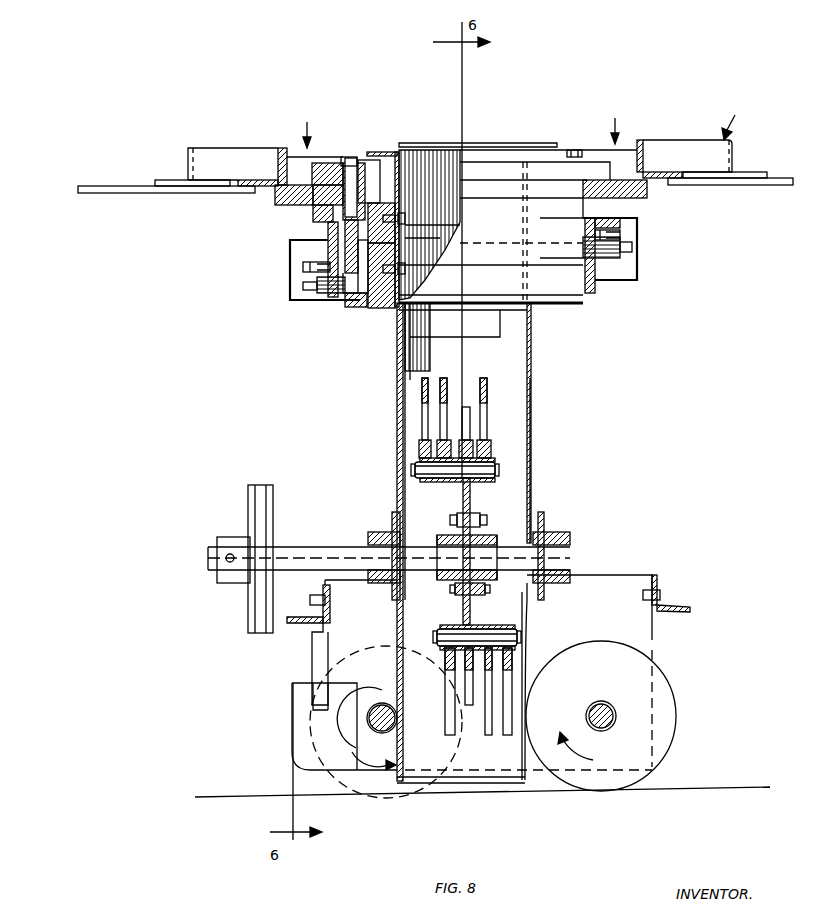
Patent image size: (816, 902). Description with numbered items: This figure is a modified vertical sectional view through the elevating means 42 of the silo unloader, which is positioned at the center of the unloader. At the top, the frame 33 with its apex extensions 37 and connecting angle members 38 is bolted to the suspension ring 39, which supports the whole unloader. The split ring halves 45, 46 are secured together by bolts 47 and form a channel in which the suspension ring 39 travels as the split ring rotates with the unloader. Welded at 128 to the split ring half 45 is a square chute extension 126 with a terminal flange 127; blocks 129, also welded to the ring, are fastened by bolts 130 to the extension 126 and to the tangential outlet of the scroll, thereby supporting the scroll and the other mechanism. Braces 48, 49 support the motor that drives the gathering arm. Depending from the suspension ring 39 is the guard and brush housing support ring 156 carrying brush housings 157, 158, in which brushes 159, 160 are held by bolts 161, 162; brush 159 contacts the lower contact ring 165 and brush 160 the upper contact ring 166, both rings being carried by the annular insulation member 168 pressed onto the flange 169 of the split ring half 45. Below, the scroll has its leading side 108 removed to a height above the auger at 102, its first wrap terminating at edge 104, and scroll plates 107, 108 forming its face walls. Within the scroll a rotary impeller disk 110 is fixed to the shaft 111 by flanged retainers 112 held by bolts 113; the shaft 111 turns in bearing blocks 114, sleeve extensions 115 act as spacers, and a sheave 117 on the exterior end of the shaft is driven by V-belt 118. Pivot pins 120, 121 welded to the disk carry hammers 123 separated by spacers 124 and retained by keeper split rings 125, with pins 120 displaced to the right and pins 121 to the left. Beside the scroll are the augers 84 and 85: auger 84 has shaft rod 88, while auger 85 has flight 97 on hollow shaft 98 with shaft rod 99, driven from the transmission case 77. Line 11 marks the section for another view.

The section line 11 is at (470, 127).
The frame 33 is at (733, 118).
The apex extensions 37 is at (122, 193).
The connecting angle members 38 is at (280, 147).
The suspension ring 39 is at (275, 200).
The elevating means 42 is at (540, 377).
The split ring half 45 is at (313, 212).
The split ring half 46 is at (323, 176).
The bolts 47 is at (349, 158).
The brace 48 is at (296, 624).
The brace 49 is at (690, 605).
The transmission case 77 is at (643, 640).
The auger 84 is at (302, 749).
The auger 85 is at (686, 711).
The shaft rod 88 is at (368, 722).
The flight 97 is at (665, 733).
The hollow shaft 98 is at (612, 728).
The shaft rod 99 is at (615, 708).
The removed leading side 102 is at (525, 775).
The edge 104 is at (452, 783).
The scroll plate 107 is at (397, 622).
The scroll plate 108 is at (531, 428).
The disk 110 is at (470, 500).
The shaft 111 is at (312, 555).
The flanged retainers 112 is at (447, 535).
The bolts 113 is at (486, 518).
The bearing blocks 114 is at (378, 532).
The sleeve extensions 115 is at (416, 580).
The sheave 117 is at (248, 615).
The V-belt 118 is at (262, 635).
The pivot pins 120 is at (520, 636).
The pivot pins 121 is at (415, 472).
The hammers 123 is at (483, 378).
The spacers 124 is at (465, 440).
The split rings 125 is at (490, 455).
The square chute extension 126 is at (399, 188).
The terminal flange 127 is at (372, 150).
The welds 128 is at (370, 205).
The blocks 129 is at (372, 308).
The bolts 130 is at (405, 218).
The guard and brush housing support ring 156 is at (598, 293).
The brush housing 157 is at (292, 302).
The brush housing 158 is at (640, 280).
The brush 159 is at (322, 296).
The brush 160 is at (583, 249).
The bolt 161 is at (303, 268).
The bolt 162 is at (622, 236).
The contact ring 165 is at (350, 306).
The contact ring 166 is at (537, 239).
The annular insulation member 168 is at (355, 305).
The flange 169 is at (405, 238).